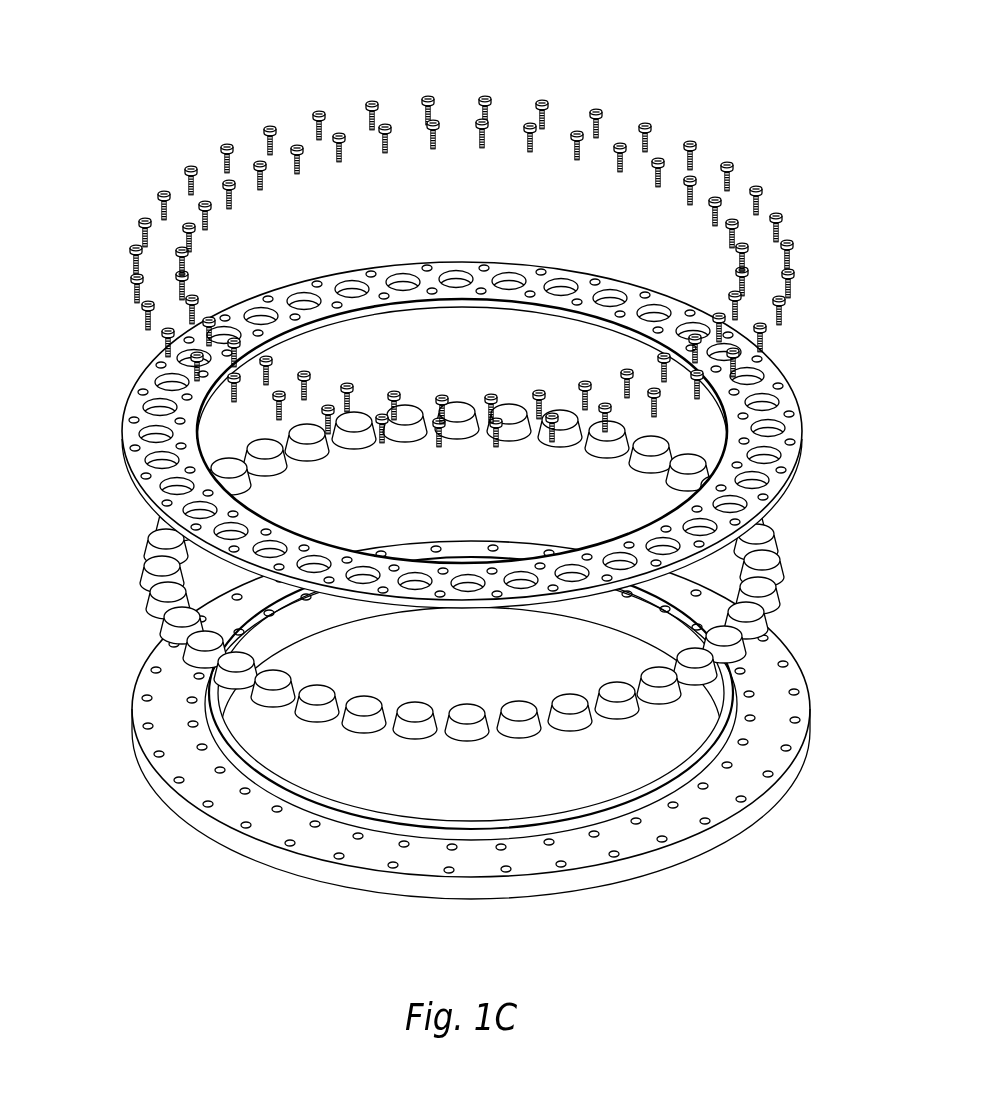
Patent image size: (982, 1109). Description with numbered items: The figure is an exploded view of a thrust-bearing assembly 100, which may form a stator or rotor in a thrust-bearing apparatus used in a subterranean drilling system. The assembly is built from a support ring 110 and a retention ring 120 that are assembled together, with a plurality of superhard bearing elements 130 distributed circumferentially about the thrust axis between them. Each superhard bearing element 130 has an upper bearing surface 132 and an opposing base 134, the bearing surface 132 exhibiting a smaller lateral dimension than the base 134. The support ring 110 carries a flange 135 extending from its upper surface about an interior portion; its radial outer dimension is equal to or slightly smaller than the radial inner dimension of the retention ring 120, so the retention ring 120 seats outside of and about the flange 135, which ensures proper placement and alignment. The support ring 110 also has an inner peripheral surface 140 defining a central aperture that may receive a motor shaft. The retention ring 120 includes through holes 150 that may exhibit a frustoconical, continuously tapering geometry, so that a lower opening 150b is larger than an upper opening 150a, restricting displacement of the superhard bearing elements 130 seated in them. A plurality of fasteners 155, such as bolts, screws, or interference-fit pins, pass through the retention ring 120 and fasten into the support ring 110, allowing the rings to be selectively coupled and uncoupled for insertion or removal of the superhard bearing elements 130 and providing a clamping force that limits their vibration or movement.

The thrust-bearing assembly 100 is at (742, 52).
The support ring 110 is at (498, 720).
The retention ring 120 is at (467, 435).
The superhard bearing elements 130 is at (462, 571).
The upper bearing surface 132 is at (155, 586).
The base 134 is at (150, 616).
The flange 135 is at (310, 788).
The inner peripheral surface 140 is at (293, 625).
The through holes 150 is at (467, 431).
The upper opening 150a is at (774, 430).
The lower opening 150b is at (765, 426).
The fasteners 155 is at (134, 243).